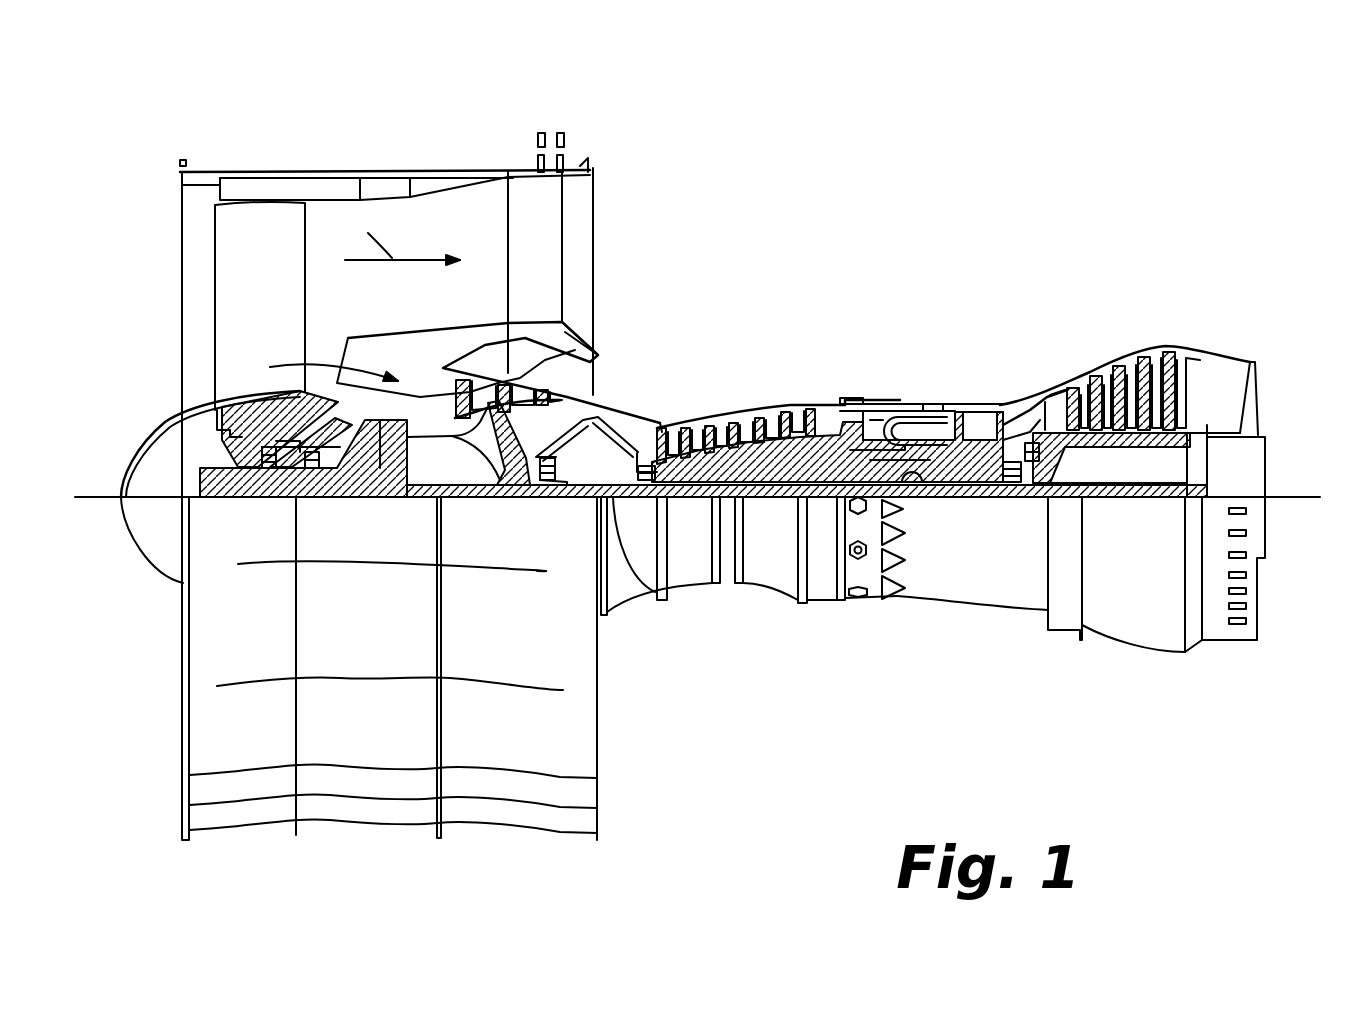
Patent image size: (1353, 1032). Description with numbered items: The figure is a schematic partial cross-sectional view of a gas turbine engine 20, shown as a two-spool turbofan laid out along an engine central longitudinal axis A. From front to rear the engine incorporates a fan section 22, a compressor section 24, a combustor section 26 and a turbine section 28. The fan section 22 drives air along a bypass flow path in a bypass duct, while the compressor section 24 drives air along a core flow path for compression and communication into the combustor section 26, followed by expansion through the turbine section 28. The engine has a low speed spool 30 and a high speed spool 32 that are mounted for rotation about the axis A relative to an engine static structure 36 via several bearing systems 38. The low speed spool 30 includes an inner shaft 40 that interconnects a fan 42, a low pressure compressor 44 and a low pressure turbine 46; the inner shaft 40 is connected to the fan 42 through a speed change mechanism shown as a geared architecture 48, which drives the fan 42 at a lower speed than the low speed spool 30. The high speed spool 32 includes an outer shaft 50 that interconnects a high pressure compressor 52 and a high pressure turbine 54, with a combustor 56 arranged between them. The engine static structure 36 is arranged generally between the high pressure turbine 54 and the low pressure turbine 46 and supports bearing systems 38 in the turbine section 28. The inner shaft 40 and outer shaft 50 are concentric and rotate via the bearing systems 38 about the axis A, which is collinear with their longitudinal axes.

The gas turbine engine 20 is at (925, 212).
The fan section 22 is at (168, 137).
The compressor section 24 is at (432, 305).
The combustor section 26 is at (1005, 305).
The turbine section 28 is at (1017, 305).
The low speed spool 30 is at (777, 504).
The high speed spool 32 is at (818, 458).
The engine static structure 36 is at (824, 602).
The bearing systems 38 is at (268, 470).
The inner shaft 40 is at (655, 590).
The fan 42 is at (270, 326).
The low pressure compressor 44 is at (522, 380).
The low pressure turbine 46 is at (1120, 378).
The geared architecture 48 is at (400, 478).
The outer shaft 50 is at (925, 468).
The high pressure compressor 52 is at (747, 465).
The high pressure turbine 54 is at (975, 410).
The combustor 56 is at (905, 430).
The engine central longitudinal axis A is at (1302, 497).